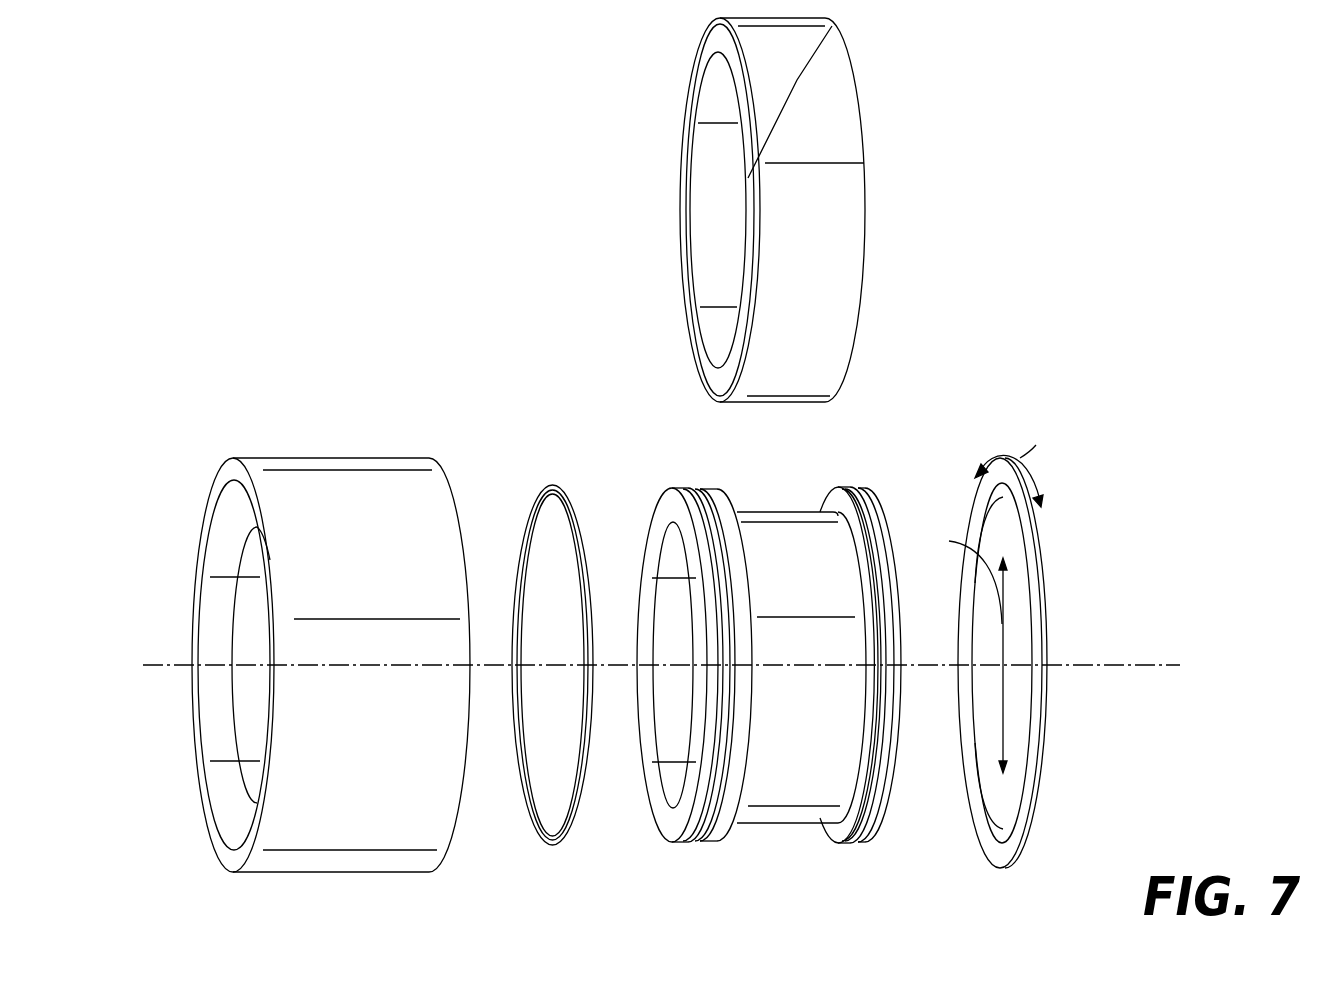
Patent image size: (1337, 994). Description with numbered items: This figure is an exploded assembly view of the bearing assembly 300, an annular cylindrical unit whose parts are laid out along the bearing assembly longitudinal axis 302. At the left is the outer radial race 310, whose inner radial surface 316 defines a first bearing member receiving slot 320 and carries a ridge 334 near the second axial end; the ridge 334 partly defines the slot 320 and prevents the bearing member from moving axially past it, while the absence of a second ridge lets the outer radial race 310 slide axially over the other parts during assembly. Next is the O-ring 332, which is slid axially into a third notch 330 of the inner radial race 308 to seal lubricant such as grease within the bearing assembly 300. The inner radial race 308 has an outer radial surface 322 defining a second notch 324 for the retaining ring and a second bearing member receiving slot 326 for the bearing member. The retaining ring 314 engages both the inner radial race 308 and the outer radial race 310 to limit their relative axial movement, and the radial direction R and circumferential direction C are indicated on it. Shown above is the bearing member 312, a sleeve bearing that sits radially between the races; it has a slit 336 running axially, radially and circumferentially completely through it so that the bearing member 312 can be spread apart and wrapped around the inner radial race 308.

The bearing assembly 300 is at (1086, 71).
The bearing assembly longitudinal axis 302 is at (1166, 664).
The inner radial race 308 is at (774, 539).
The outer radial race 310 is at (341, 873).
The bearing member 312 is at (826, 222).
The retaining ring 314 is at (1010, 862).
The inner radial surface 316 is at (260, 632).
The first bearing member receiving slot 320 is at (255, 588).
The outer radial surface 322 is at (713, 494).
The second notch 324 is at (864, 507).
The second bearing member receiving slot 326 is at (833, 629).
The third notch 330 is at (702, 503).
The O-ring 332 is at (549, 846).
The ridge 334 is at (232, 828).
The slit 336 is at (797, 83).